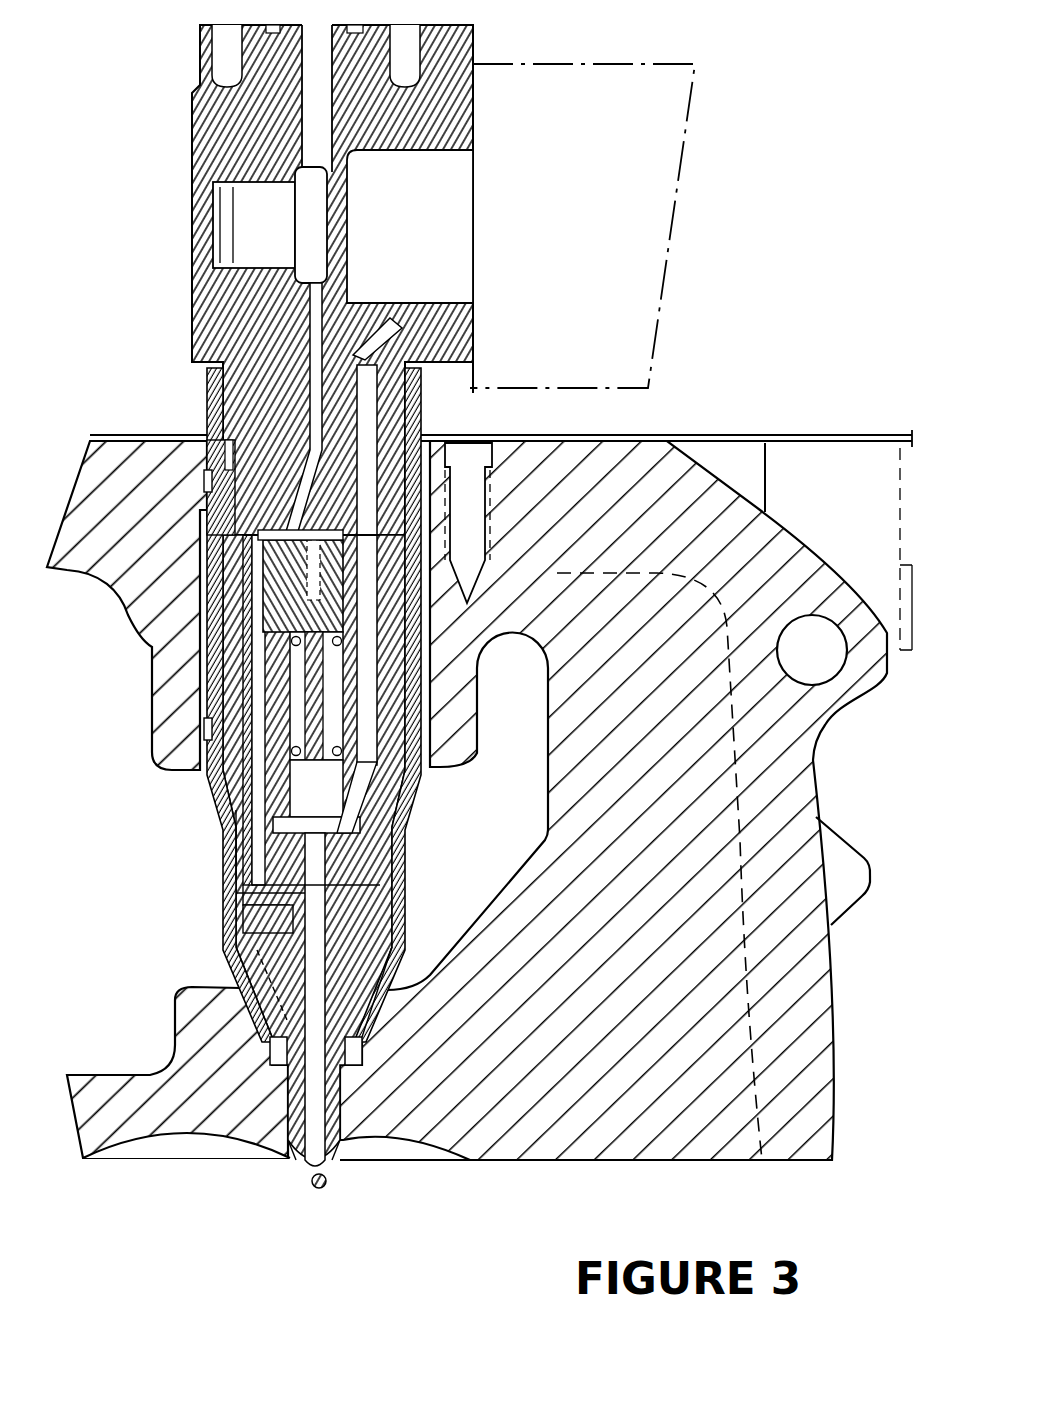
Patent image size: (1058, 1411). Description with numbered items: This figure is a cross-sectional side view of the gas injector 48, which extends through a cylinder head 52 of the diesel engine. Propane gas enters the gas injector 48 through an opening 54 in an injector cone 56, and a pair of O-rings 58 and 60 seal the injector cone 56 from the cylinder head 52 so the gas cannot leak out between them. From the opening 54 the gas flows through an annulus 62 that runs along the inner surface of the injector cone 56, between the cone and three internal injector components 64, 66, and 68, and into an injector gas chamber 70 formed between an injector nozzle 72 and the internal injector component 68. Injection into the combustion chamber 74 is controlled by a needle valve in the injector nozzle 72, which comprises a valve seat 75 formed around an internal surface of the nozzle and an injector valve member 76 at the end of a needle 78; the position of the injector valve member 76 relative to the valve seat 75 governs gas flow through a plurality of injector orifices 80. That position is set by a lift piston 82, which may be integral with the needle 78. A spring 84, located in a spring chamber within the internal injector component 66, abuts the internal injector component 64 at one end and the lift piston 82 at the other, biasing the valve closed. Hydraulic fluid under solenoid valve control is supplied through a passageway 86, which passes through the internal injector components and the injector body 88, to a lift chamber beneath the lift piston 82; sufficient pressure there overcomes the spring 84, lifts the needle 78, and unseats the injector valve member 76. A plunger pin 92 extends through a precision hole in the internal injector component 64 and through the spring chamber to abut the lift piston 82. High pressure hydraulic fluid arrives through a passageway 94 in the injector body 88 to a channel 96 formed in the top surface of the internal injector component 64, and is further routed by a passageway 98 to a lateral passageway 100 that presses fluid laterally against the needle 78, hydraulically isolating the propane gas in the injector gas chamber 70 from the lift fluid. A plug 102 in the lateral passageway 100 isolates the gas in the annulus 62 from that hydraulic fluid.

The gas injector 48 is at (724, 160).
The cylinder head 52 is at (790, 784).
The opening 54 is at (243, 657).
The injector cone 56 is at (210, 402).
The O-ring 58 is at (205, 478).
The O-ring 60 is at (413, 660).
The annulus 62 is at (206, 730).
The internal injector component 64 is at (262, 537).
The internal injector component 66 is at (258, 690).
The internal injector component 68 is at (283, 862).
The injector gas chamber 70 is at (242, 968).
The injector nozzle 72 is at (385, 1000).
The combustion chamber 74 is at (176, 1220).
The valve seat 75 is at (304, 1160).
The injector valve member 76 is at (345, 1145).
The needle 78 is at (313, 1112).
The injector orifices 80 is at (327, 1175).
The lift piston 82 is at (398, 838).
The spring 84 is at (325, 702).
The passageway 86 is at (322, 808).
The injector body 88 is at (434, 363).
The plunger pin 92 is at (385, 530).
The passageway 94 is at (316, 314).
The channel 96 is at (280, 527).
The passageway 98 is at (318, 575).
The lateral passageway 100 is at (263, 880).
The plug 102 is at (255, 915).